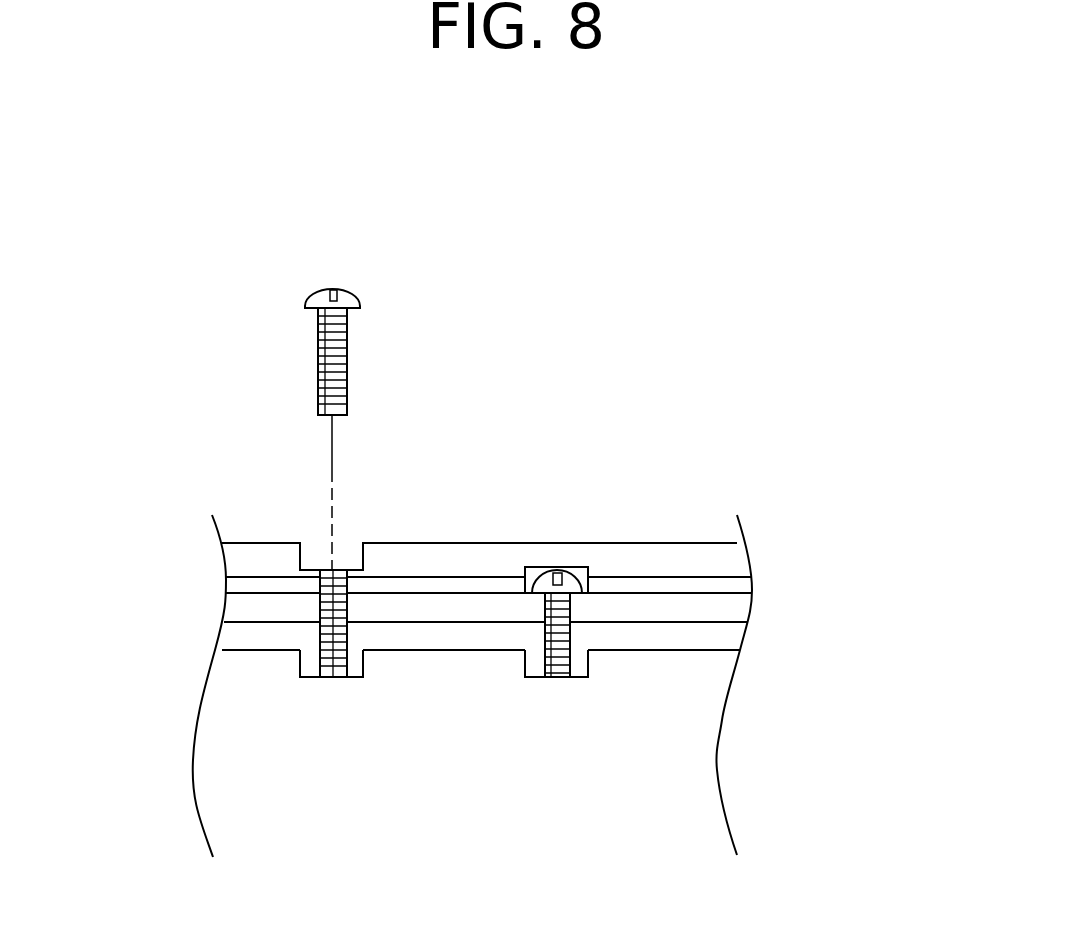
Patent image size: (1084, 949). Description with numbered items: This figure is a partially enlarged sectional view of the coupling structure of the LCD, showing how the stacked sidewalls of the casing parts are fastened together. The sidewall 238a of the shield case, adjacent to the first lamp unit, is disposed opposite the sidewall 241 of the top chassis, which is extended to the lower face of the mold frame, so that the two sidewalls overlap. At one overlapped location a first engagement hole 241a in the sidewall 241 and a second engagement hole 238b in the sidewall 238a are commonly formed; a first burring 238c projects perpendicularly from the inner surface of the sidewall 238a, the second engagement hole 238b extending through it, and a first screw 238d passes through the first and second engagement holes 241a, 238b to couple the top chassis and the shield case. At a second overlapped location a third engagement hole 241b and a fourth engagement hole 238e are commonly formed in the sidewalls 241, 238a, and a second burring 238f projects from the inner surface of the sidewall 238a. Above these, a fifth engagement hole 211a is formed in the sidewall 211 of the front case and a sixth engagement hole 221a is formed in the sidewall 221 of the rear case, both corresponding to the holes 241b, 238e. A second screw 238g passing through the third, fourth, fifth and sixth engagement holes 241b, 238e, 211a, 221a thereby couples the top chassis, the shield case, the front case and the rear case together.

The sidewall of the front case 211 is at (718, 560).
The fifth engagement hole 211a is at (306, 544).
The sidewall of the rear case 221 is at (743, 578).
The sixth engagement hole 221a is at (352, 583).
The sidewall of the top chassis 241 is at (737, 608).
The first engagement hole 241a is at (572, 610).
The third engagement hole 241b is at (318, 608).
The sidewall of the shield case 238a is at (733, 637).
The second engagement hole 238b is at (576, 658).
The first burring 238c is at (541, 668).
The first screw 238d is at (562, 575).
The fourth engagement hole 238e is at (333, 680).
The second burring 238f is at (307, 678).
The second screw 238g is at (345, 290).